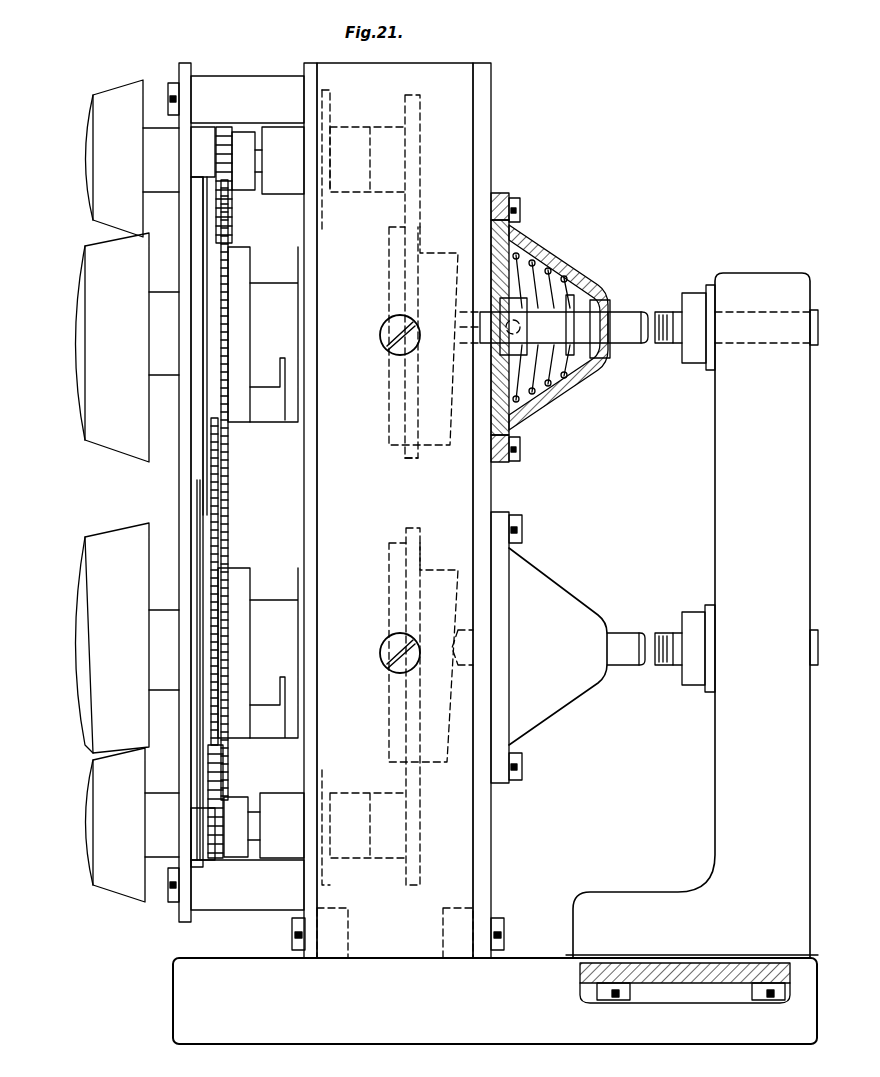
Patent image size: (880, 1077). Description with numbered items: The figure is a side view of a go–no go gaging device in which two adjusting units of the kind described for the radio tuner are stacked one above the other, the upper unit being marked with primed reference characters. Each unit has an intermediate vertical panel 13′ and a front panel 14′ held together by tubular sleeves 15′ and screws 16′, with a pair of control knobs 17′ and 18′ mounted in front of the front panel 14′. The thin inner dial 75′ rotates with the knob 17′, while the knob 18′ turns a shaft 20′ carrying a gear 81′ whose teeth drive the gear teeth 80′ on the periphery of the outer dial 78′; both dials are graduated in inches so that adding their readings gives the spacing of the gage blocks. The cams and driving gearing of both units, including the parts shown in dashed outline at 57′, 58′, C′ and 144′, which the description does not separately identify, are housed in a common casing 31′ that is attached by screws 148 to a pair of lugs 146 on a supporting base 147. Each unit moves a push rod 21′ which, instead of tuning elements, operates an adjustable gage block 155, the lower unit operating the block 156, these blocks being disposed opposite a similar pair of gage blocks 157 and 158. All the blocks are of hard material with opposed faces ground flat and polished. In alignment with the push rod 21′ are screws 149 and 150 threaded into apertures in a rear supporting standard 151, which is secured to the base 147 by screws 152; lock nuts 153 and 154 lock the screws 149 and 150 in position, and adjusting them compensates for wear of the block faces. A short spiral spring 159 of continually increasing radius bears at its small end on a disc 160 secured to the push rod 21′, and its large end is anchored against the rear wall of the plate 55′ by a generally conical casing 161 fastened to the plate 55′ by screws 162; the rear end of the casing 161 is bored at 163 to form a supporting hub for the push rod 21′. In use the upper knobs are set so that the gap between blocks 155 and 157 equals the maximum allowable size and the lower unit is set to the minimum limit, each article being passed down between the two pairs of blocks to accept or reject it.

The intermediate vertical panel 13′ is at (304, 70).
The front panel 14′ is at (182, 72).
The tubular sleeve 15′ is at (226, 80).
The screw 16′ is at (168, 108).
The knob 17′ is at (118, 444).
The knob 18′ is at (104, 98).
The shaft 20′ is at (256, 160).
The push rod 21′ is at (620, 312).
The common casing 31′ is at (449, 70).
The plate 55′ is at (484, 87).
The rod 57′ is at (404, 103).
The slide block 58′ is at (402, 457).
The inner dial 75′ is at (203, 212).
The outer dial 78′ is at (230, 267).
The gear teeth 80′ is at (226, 310).
The gear 81′ is at (229, 212).
The cam C′ is at (446, 246).
The screw 144′ is at (382, 330).
The lug 146 is at (338, 912).
The supporting base 147 is at (345, 1036).
The screw 148 is at (292, 934).
The screw 149 is at (658, 312).
The screw 150 is at (667, 632).
The rear supporting standard 151 is at (718, 768).
The screw 152 is at (615, 996).
The lock nut 153 is at (690, 293).
The lock nut 154 is at (694, 614).
The gage block 155 is at (641, 345).
The gage block 156 is at (641, 666).
The gage block 157 is at (659, 345).
The gage block 158 is at (658, 666).
The spiral spring 159 is at (545, 280).
The disc 160 is at (572, 325).
The conical casing 161 is at (532, 250).
The screw 162 is at (512, 200).
The bore 163 is at (598, 298).